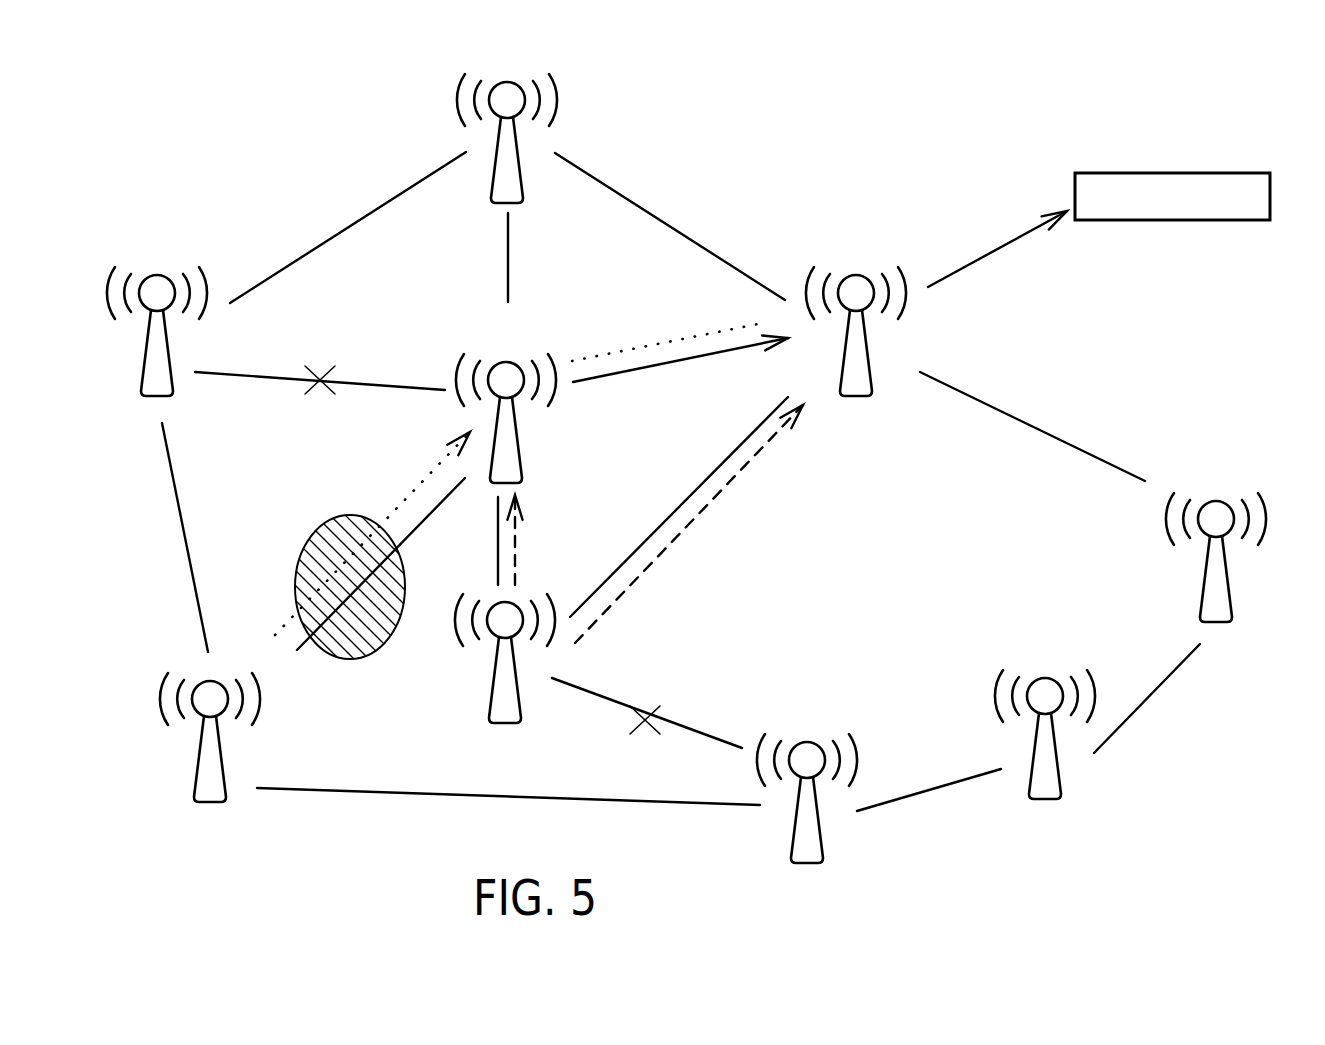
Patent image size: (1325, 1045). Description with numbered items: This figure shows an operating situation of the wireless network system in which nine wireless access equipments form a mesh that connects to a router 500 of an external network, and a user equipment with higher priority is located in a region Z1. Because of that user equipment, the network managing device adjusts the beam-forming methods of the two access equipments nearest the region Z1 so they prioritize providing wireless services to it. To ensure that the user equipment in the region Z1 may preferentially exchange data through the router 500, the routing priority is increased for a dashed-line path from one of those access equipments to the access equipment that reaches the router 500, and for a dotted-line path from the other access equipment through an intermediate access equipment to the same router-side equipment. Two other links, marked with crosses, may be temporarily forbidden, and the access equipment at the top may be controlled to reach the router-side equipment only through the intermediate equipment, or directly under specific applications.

The router 500 is at (1258, 172).
The region Z1 is at (338, 518).